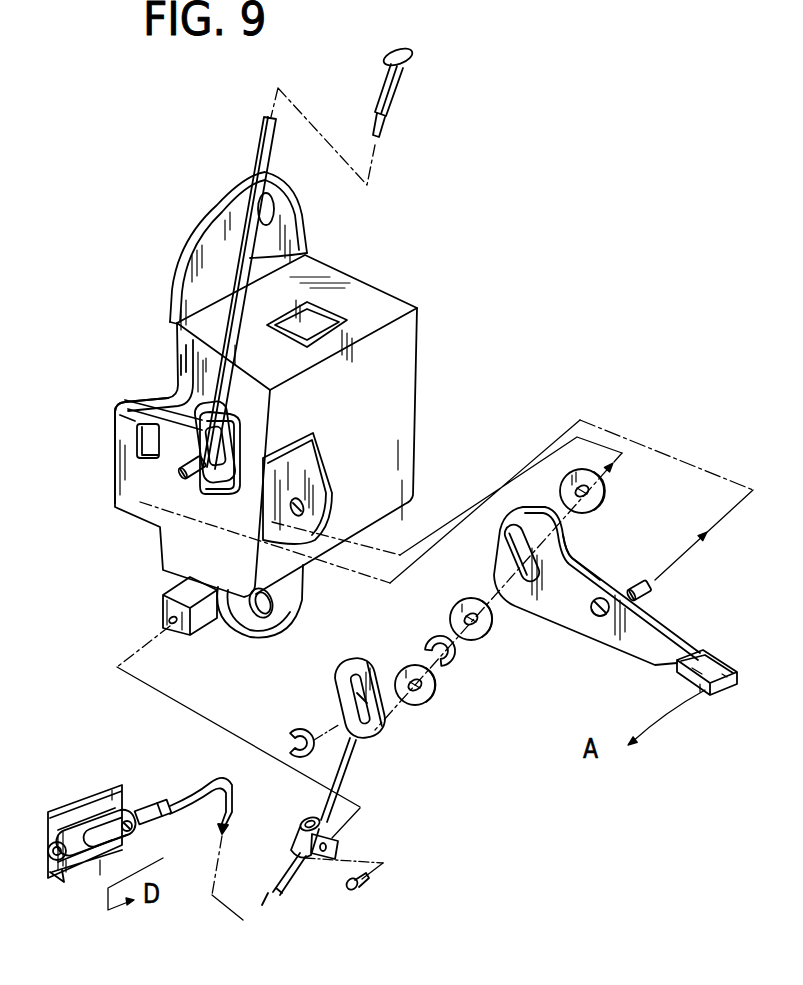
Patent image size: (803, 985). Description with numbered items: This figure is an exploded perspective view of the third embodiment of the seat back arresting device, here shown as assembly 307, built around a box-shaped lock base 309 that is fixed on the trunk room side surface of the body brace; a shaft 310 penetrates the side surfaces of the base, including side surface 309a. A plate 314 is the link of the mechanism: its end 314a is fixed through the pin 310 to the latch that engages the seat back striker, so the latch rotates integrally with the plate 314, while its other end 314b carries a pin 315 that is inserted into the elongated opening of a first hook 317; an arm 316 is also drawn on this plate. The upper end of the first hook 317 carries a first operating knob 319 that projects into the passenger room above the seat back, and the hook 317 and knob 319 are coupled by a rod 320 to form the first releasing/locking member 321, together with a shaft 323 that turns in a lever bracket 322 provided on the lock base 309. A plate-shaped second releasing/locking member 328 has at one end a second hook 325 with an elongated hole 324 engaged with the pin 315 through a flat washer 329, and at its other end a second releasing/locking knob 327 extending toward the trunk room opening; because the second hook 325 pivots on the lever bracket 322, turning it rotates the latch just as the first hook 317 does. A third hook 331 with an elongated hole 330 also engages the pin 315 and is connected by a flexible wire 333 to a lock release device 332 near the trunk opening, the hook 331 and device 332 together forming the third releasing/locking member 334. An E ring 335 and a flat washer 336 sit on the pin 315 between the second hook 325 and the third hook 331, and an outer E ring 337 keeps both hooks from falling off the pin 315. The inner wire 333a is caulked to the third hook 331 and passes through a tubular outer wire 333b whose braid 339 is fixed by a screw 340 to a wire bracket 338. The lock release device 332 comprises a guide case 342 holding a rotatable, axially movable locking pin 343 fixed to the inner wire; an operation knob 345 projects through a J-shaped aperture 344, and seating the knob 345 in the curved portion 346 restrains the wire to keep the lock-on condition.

The shift lever assembly 307 is at (502, 375).
The lock base 309 is at (416, 370).
The side surface of lock base 309a is at (202, 382).
The shaft 310 is at (140, 443).
The plate 314 is at (137, 467).
The end of plate 314a is at (133, 424).
The other end of plate 314b is at (230, 486).
The pin 315 is at (182, 472).
The arm 316 is at (165, 408).
The first hook 317 is at (226, 417).
The first operating knob 319 is at (410, 60).
The rod 320 is at (307, 247).
The first releasing/locking member 321 is at (278, 167).
The lever bracket 322 is at (320, 500).
The shaft 323 is at (635, 582).
The elongated hole 324 is at (506, 533).
The second hook 325 is at (552, 545).
The second releasing/locking knob 327 is at (698, 690).
The second releasing/locking member 328 is at (637, 620).
The flat washer 329 is at (600, 498).
The elongated hole 330 is at (365, 705).
The third hook 331 is at (350, 664).
The lock release device 332 is at (131, 800).
The flexible wire 333 is at (290, 883).
The inner wire 333a is at (234, 799).
The flexible tubular wire 333b is at (270, 873).
The third releasing/locking member 334 is at (279, 903).
The E ring 335 is at (455, 661).
The flat washer 336 is at (491, 630).
The E ring 337 is at (294, 730).
The wire bracket 338 is at (160, 613).
The braid 339 is at (338, 841).
The screw 340 is at (368, 880).
The guide case 342 is at (110, 800).
The locking pin 343 is at (163, 818).
The J-shaped aperture 344 is at (87, 822).
The operation knob 345 is at (130, 830).
The curved portion 346 is at (90, 862).